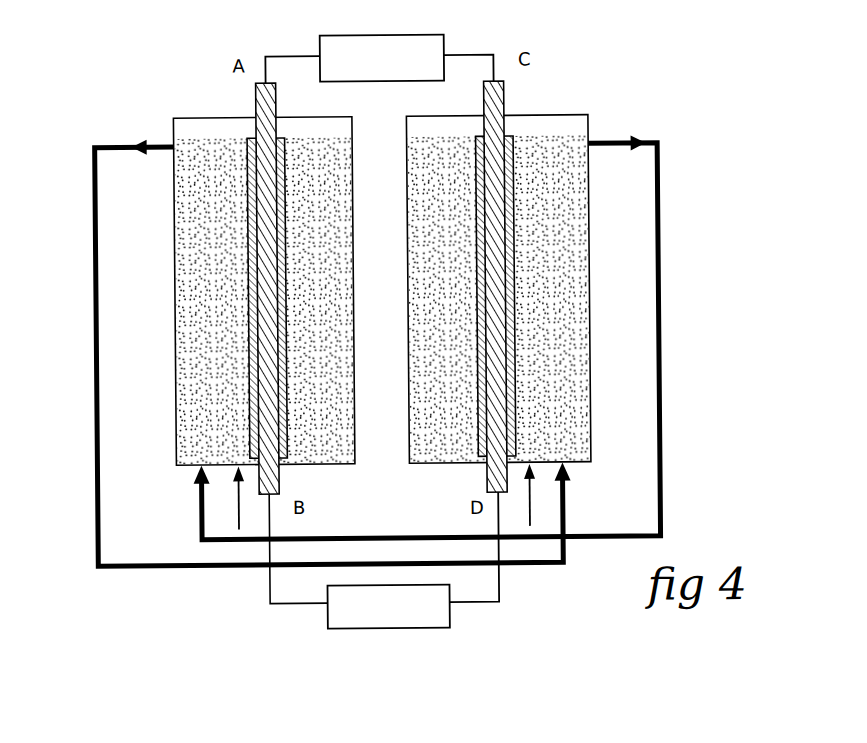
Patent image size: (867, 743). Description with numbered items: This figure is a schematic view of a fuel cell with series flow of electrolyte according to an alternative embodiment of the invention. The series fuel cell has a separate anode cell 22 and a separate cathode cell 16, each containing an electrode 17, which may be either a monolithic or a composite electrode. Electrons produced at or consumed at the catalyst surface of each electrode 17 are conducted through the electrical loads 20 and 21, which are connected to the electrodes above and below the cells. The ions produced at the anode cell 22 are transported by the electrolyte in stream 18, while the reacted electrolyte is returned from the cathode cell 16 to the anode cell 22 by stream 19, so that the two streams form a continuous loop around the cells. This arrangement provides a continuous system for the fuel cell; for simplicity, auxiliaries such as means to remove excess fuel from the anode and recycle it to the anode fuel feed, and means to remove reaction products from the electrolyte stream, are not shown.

The cathode cell 16 is at (553, 238).
The electrode 17 is at (266, 104).
The stream 18 is at (98, 462).
The stream 19 is at (654, 365).
The electrical load 20 is at (372, 66).
The electrical load 21 is at (374, 616).
The anode cell 22 is at (210, 265).